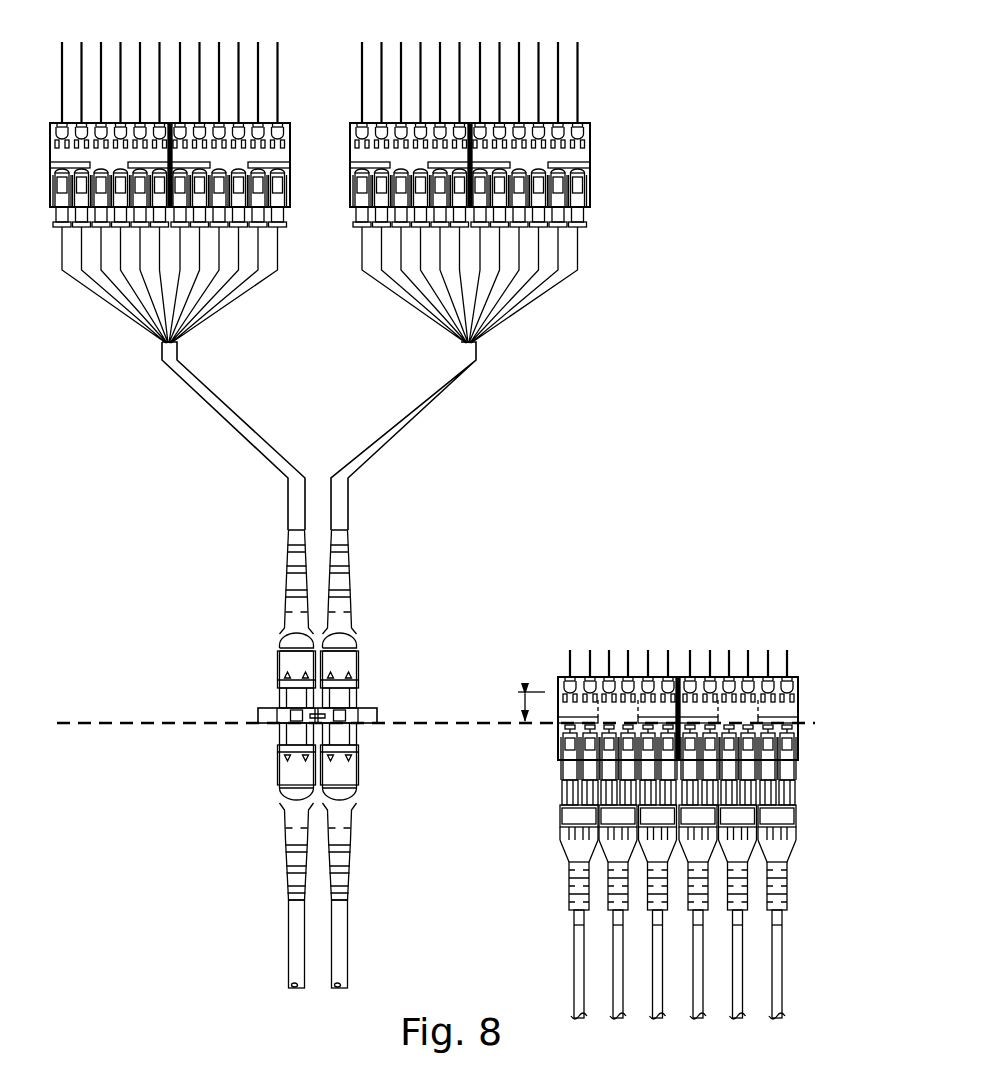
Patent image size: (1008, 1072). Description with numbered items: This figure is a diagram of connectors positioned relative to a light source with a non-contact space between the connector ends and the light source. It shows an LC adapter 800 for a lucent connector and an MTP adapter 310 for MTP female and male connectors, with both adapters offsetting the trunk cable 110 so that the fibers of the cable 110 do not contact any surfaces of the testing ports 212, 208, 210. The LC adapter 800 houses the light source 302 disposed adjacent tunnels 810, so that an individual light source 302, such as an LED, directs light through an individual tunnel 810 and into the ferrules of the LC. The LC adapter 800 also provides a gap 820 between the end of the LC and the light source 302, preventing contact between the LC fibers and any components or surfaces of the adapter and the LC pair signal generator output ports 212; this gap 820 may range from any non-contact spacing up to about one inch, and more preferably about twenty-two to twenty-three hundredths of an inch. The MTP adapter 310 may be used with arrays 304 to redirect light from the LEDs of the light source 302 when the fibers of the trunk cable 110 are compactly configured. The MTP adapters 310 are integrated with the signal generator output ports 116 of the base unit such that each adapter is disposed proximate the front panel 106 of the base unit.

The light source 302 is at (601, 74).
The arrays 304 is at (601, 258).
The testing port 208 is at (267, 629).
The testing port 210 is at (368, 629).
The MTP adapter 310 is at (246, 712).
The front panel 106 is at (130, 728).
The signal generator output ports 116 is at (377, 741).
The trunk cable 110 is at (257, 918).
The LC pair signal generator output ports 212 is at (533, 789).
The LC adapter 800 is at (545, 663).
The tunnel 810 is at (767, 711).
The gap 820 is at (520, 706).